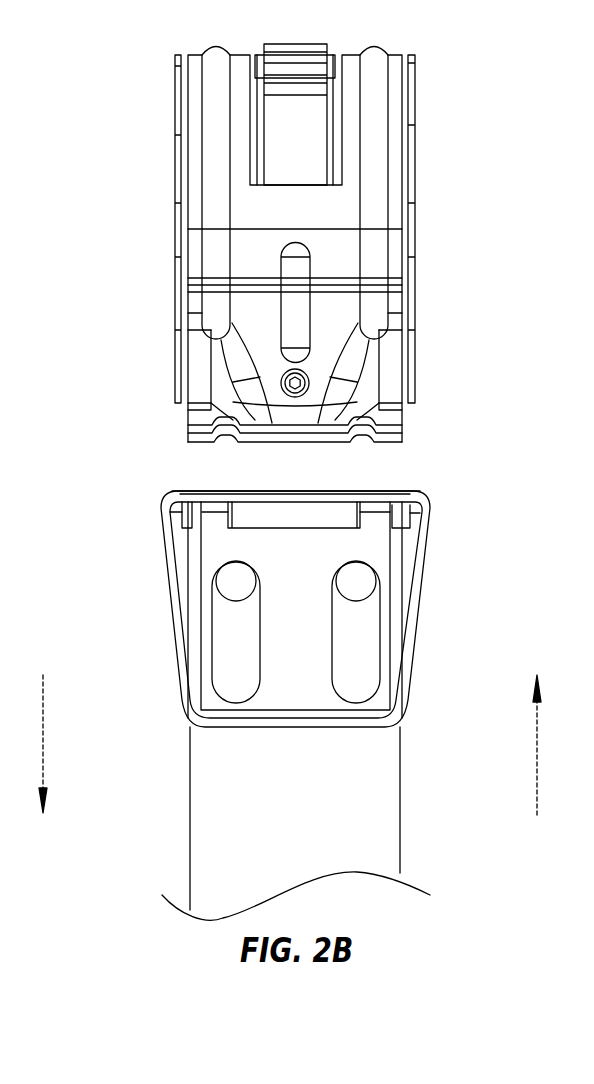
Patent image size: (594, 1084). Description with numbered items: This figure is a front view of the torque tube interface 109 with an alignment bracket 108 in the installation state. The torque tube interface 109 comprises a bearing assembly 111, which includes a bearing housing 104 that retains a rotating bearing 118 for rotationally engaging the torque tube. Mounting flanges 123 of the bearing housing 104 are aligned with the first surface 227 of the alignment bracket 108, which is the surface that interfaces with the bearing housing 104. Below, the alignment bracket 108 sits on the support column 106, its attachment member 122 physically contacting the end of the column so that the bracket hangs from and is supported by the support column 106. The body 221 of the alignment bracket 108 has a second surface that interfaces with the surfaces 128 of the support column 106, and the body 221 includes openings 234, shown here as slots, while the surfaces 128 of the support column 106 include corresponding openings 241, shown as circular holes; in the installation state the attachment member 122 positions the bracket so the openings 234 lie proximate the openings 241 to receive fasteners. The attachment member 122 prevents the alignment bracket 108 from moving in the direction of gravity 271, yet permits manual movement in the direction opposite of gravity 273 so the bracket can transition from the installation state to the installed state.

The bearing housing 104 is at (398, 292).
The support column 106 is at (372, 807).
The alignment bracket 108 is at (387, 697).
The torque tube interface 109 is at (344, 243).
The bearing assembly 111 is at (400, 125).
The rotating bearing 118 is at (177, 135).
The attachment member 122 is at (372, 515).
The mounting flange 123 is at (398, 433).
The surface of the support column 128 is at (208, 807).
The body 221 is at (415, 580).
The first surface 227 is at (180, 490).
The opening of the alignment bracket 234 is at (225, 653).
The opening of the support column 241 is at (227, 580).
The direction of gravity 271 is at (44, 750).
The direction opposite of gravity 273 is at (535, 755).